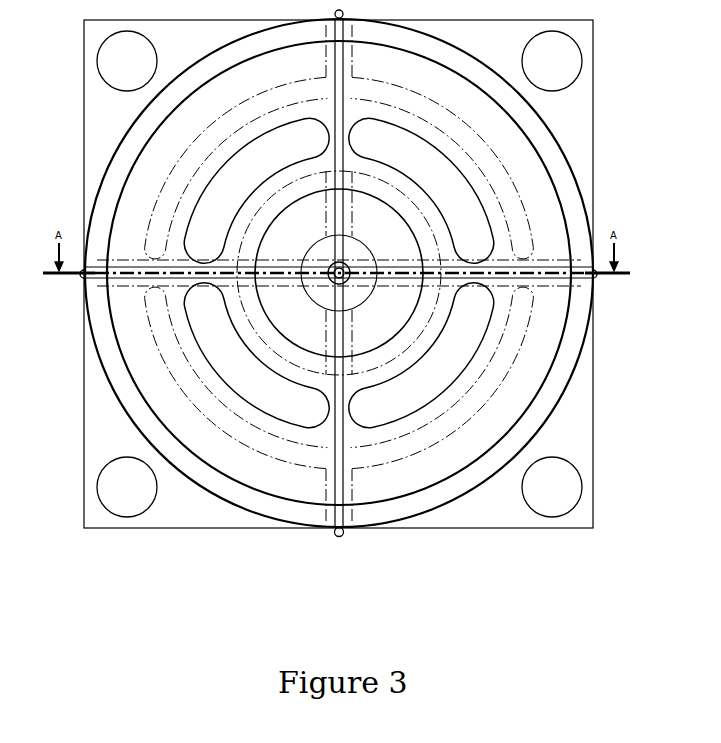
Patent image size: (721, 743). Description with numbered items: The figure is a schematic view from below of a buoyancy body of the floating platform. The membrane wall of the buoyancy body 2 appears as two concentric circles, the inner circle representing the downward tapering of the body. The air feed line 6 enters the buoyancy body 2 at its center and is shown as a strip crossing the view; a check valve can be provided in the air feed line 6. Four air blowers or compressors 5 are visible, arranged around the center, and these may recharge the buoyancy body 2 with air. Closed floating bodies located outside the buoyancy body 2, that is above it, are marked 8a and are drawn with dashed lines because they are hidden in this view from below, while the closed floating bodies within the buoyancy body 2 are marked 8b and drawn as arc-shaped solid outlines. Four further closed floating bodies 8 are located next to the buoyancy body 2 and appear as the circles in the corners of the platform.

The buoyancy body 2 is at (148, 139).
The air blowers or compressors 5 is at (402, 268).
The air feed line 6 is at (340, 67).
The closed floating bodies 8 is at (115, 487).
The closed floating bodies outside the buoyancy body 8a is at (126, 237).
The closed floating bodies within the buoyancy body 8b is at (243, 380).